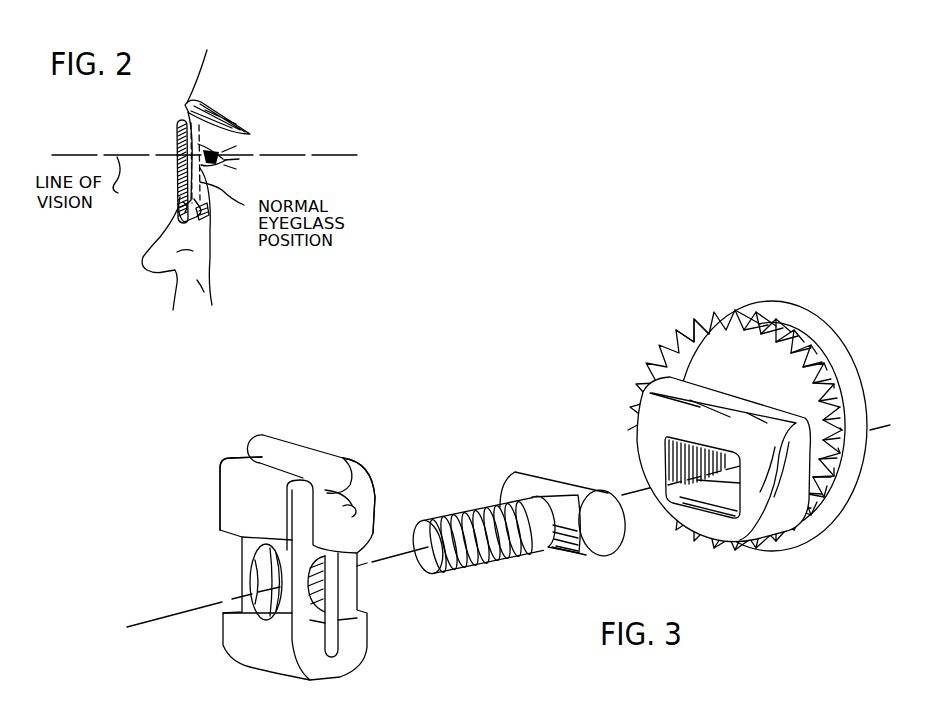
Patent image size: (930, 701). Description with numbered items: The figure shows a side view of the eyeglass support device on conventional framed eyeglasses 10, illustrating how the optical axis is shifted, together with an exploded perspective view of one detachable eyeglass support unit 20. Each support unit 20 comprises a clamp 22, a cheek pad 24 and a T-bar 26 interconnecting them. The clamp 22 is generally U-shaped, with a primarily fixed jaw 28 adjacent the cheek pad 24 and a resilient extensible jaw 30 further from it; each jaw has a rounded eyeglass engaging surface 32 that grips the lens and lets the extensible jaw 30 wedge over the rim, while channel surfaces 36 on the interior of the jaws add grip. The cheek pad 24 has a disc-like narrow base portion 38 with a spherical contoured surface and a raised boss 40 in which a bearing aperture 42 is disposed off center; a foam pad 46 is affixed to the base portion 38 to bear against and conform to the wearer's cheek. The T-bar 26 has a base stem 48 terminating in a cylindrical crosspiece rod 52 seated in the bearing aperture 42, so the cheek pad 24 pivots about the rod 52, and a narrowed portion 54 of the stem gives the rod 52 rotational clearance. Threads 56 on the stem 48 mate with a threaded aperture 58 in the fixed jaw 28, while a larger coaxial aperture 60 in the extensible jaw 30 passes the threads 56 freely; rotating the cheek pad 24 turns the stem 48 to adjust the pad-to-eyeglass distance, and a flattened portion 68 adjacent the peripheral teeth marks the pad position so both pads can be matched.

In FIG. 2, the framed eyeglasses 10 is at (160, 132).
In FIG. 2, the eyeglass support unit 20 is at (157, 211).
In FIG. 3, the clamp 22 is at (287, 541).
In FIG. 3, the cheek pad 24 is at (737, 415).
In FIG. 3, the T-bar 26 is at (519, 525).
In FIG. 3, the primarily fixed jaw 28 is at (368, 470).
In FIG. 3, the resilient extensible jaw 30 is at (220, 483).
In FIG. 3, the eyeglass engaging surface 32 is at (252, 445).
In FIG. 3, the channel surface 36 is at (357, 515).
In FIG. 3, the disc-like narrow base portion 38 is at (700, 373).
In FIG. 3, the raised boss 40 is at (640, 403).
In FIG. 3, the bearing aperture 42 is at (690, 500).
In FIG. 3, the foam pad 46 is at (833, 523).
In FIG. 3, the base stem 48 is at (476, 540).
In FIG. 3, the cylindrical crosspiece rod 52 is at (564, 482).
In FIG. 3, the narrowed portion 54 is at (543, 537).
In FIG. 3, the threads 56 is at (480, 567).
In FIG. 3, the threaded aperture 58 is at (315, 580).
In FIG. 3, the aperture 60 is at (257, 572).
In FIG. 3, the flattened portion 68 is at (735, 403).